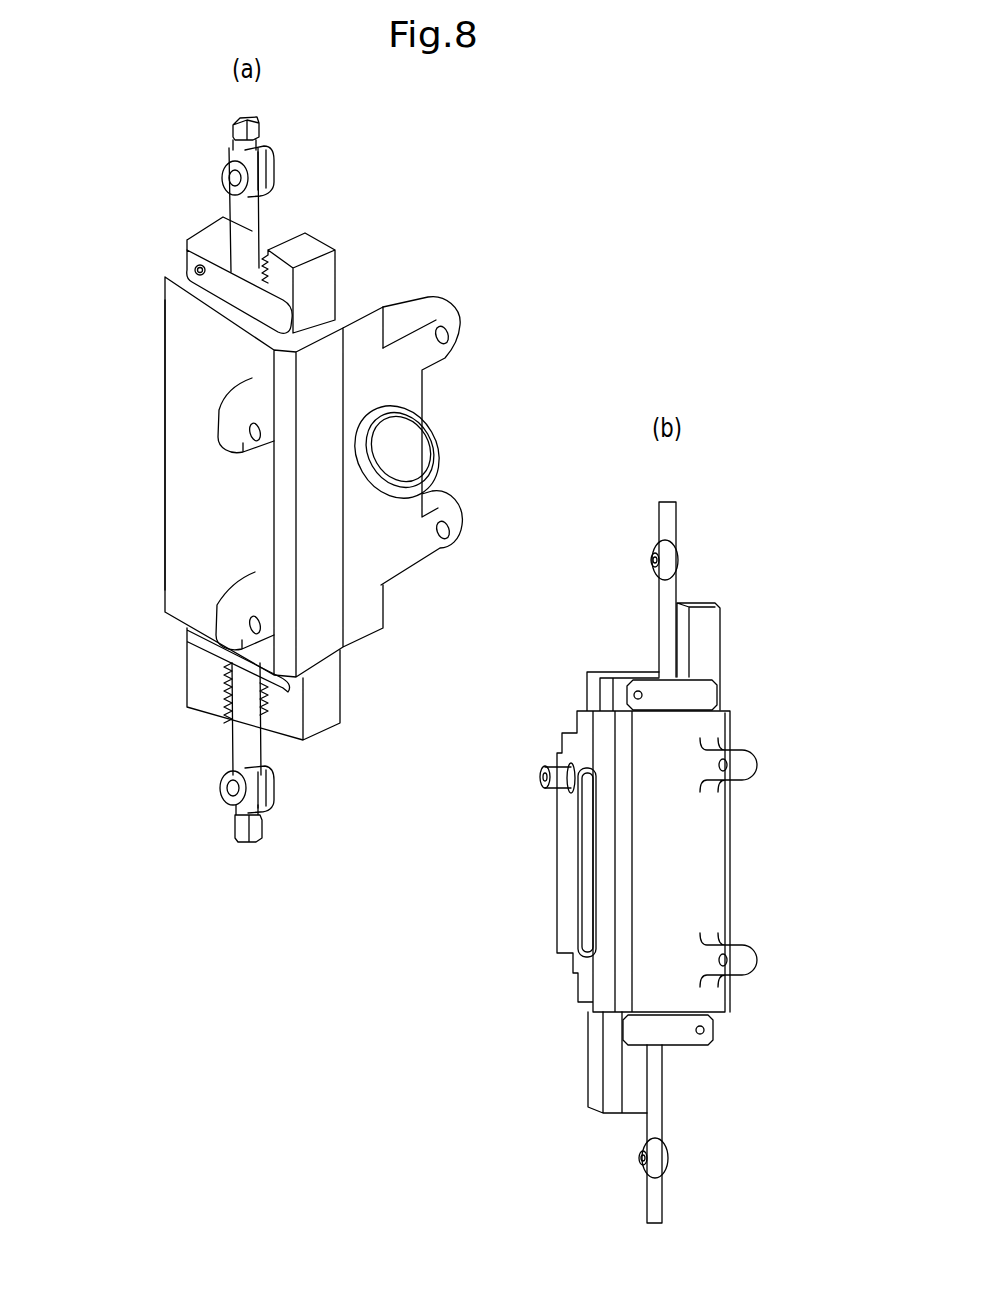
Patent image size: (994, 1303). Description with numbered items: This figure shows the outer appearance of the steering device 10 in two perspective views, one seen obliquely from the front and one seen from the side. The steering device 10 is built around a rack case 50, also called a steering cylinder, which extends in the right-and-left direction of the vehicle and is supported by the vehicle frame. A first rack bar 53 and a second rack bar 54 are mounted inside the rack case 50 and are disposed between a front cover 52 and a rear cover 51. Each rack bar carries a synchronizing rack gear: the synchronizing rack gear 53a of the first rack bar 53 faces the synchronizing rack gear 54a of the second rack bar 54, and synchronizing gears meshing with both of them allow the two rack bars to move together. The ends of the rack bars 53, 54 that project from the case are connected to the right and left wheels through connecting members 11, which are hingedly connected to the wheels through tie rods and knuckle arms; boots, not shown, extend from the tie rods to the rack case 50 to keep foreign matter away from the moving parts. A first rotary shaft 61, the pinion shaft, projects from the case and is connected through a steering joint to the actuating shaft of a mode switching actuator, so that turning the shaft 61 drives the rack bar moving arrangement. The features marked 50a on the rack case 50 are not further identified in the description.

The steering device 10 is at (123, 378).
The connecting member 11 is at (250, 223).
The rack case 50 is at (192, 502).
The mounting tab 50a is at (453, 323).
The rear cover 51 is at (208, 563).
The front cover 52 is at (355, 559).
The first rack bar 53 is at (200, 687).
The synchronizing rack gear 53a is at (240, 715).
The second rack bar 54 is at (312, 280).
The synchronizing rack gear 54a is at (230, 250).
The first rotary shaft 61 is at (543, 775).